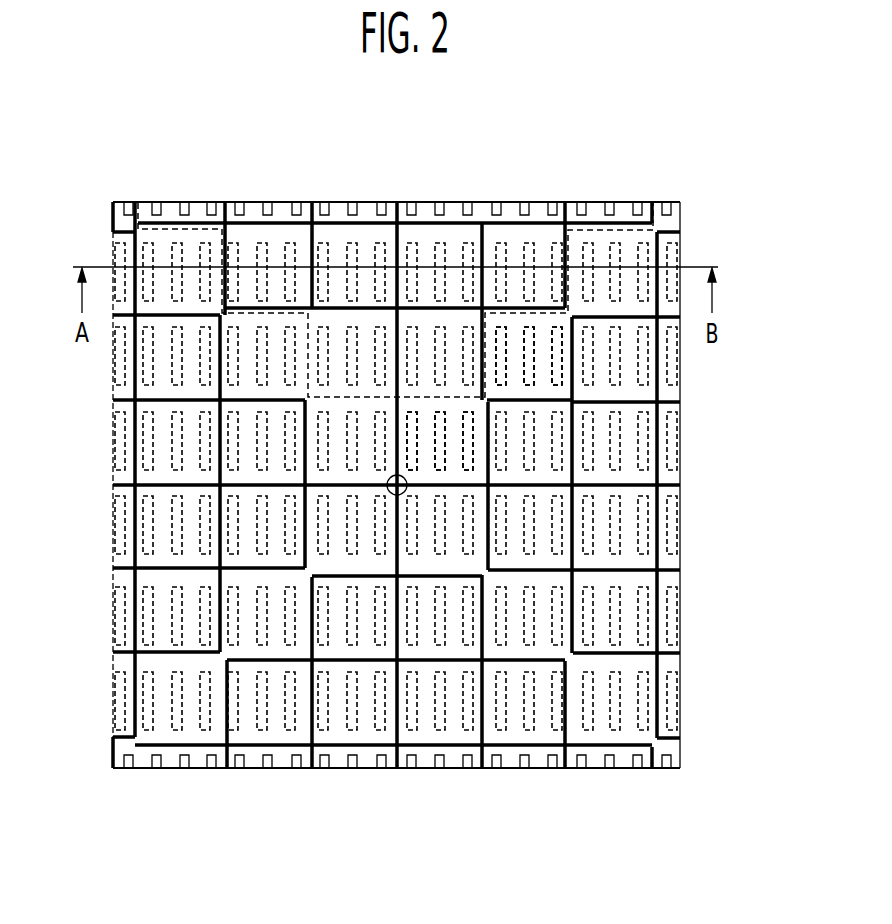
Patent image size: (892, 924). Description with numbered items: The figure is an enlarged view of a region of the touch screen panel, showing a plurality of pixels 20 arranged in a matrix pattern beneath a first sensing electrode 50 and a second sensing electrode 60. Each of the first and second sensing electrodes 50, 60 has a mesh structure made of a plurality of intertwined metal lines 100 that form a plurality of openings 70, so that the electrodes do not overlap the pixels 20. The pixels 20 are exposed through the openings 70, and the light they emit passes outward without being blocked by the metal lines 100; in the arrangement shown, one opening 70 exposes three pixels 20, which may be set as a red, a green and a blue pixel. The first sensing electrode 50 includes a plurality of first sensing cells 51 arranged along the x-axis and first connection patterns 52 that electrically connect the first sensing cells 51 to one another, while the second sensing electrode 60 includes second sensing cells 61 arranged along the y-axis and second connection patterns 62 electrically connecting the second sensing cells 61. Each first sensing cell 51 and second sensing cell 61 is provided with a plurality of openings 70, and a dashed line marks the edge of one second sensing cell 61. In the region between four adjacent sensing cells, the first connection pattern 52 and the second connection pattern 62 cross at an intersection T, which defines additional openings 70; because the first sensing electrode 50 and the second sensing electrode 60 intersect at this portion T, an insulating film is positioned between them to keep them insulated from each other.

The metal lines 100 is at (282, 223).
The pixels 20 is at (355, 247).
The openings 70 is at (533, 247).
The second sensing electrode 60 is at (599, 402).
The second sensing cells 61 is at (485, 363).
The second connection patterns 62 is at (400, 432).
The intersection T is at (407, 480).
The first sensing electrode 50 is at (396, 534).
The first sensing cells 51 is at (253, 575).
The first connection patterns 52 is at (343, 485).